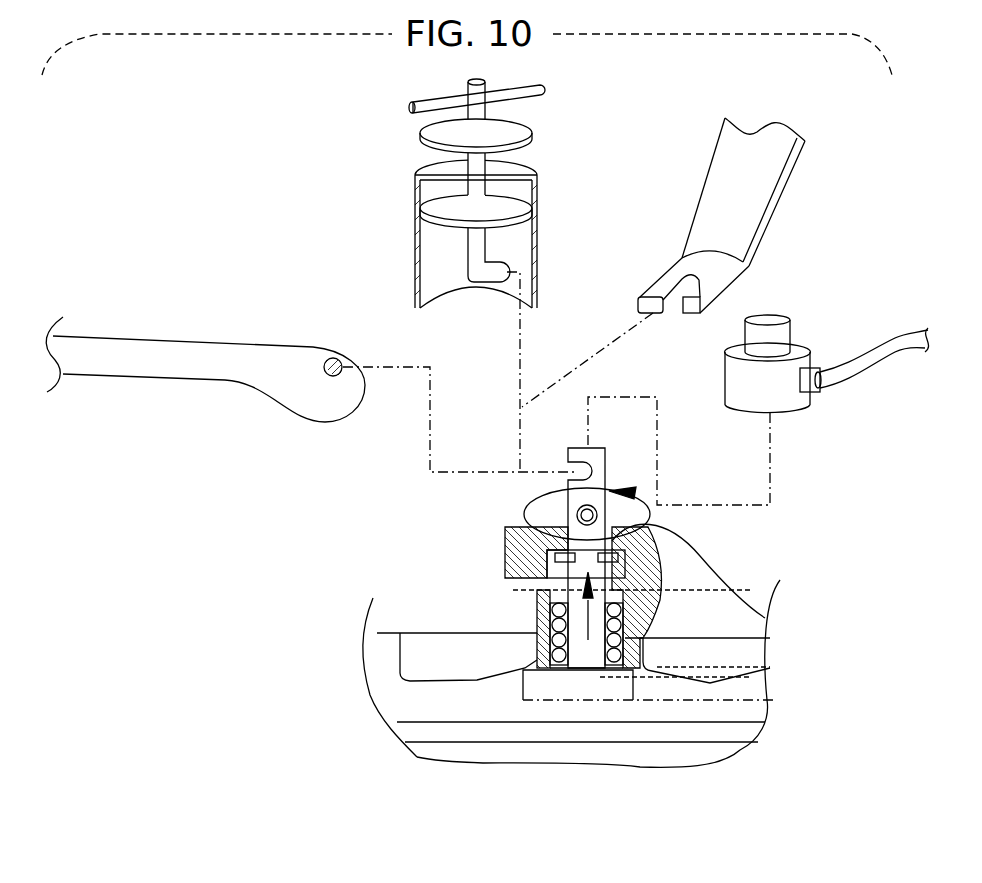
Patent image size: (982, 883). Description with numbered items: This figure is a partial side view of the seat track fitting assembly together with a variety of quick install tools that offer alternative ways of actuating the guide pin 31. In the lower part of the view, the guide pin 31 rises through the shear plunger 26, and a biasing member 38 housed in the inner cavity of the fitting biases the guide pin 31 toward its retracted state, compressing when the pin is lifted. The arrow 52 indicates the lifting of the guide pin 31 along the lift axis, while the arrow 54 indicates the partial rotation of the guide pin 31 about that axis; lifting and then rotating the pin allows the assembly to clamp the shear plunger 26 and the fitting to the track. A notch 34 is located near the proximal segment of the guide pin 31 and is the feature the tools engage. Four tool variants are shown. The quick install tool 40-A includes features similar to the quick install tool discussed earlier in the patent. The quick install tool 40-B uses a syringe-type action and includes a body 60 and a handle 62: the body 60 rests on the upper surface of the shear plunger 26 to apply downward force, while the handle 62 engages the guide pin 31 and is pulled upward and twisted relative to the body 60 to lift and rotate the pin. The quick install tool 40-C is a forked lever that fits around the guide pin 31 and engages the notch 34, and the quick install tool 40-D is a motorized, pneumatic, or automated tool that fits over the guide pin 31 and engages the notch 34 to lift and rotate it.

The handle 62 is at (478, 110).
The body 60 is at (513, 168).
The quick install tool 40-A is at (247, 332).
The quick install tool 40-B is at (450, 193).
The quick install tool 40-C is at (777, 210).
The quick install tool 40-D is at (813, 410).
The notch 34 is at (577, 473).
The arrow 54 is at (525, 502).
The shear plunger 26 is at (653, 568).
The biasing member 38 is at (552, 611).
The arrow 52 is at (592, 620).
The guide pin 31 is at (592, 655).